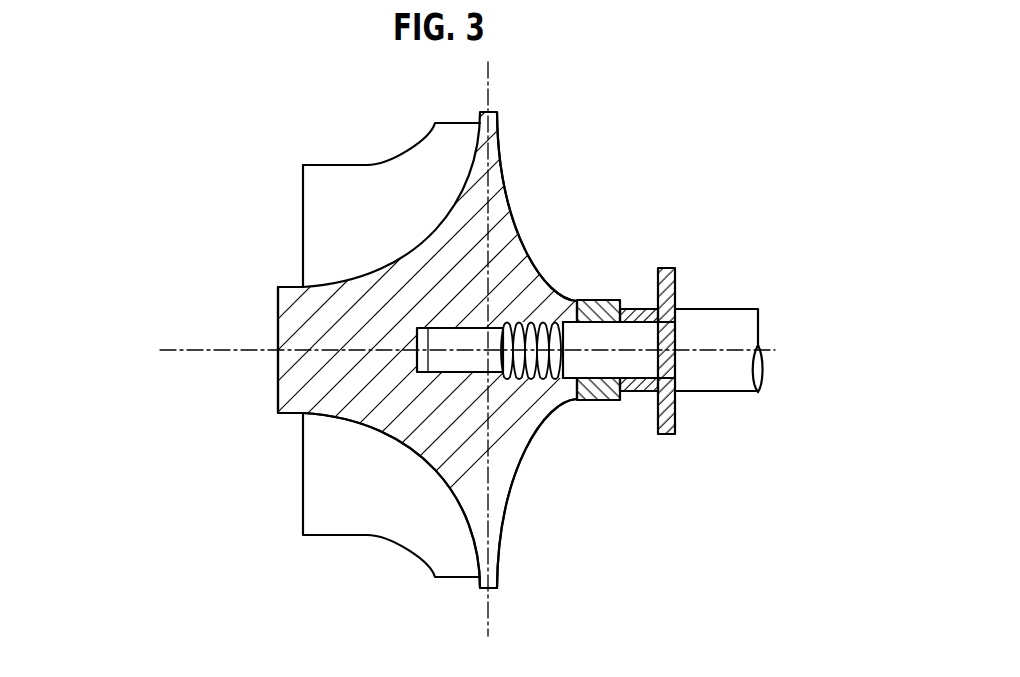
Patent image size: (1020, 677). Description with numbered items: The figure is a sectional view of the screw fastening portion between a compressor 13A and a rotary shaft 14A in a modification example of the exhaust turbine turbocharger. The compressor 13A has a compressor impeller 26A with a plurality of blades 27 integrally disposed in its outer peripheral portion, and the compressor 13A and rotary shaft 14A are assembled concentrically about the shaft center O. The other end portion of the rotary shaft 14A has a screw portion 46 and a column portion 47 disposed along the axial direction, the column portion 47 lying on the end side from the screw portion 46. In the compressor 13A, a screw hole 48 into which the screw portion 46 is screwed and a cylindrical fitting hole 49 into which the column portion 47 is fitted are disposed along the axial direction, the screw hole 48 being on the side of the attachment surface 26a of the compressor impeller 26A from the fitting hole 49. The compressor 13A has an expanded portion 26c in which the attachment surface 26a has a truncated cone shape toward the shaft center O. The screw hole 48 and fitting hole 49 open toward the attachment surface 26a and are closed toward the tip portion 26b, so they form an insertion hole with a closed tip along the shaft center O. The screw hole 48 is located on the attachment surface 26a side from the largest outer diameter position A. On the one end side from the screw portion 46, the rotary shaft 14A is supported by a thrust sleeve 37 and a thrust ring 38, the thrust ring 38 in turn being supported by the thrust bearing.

The compressor 13A is at (274, 305).
The blades 27 is at (372, 187).
The tip portion 26b is at (278, 395).
The compressor impeller 26A is at (368, 396).
The expanded portion 26c is at (526, 258).
The attachment surface 26a is at (526, 447).
The column portion 47 is at (450, 338).
The screw hole 48 is at (553, 383).
The fitting hole 49 is at (415, 373).
The screw portion 46 is at (563, 293).
The thrust sleeve 37 is at (607, 402).
The thrust ring 38 is at (668, 270).
The rotary shaft 14A is at (719, 305).
The largest outer diameter position A is at (489, 78).
The shaft center O is at (190, 353).